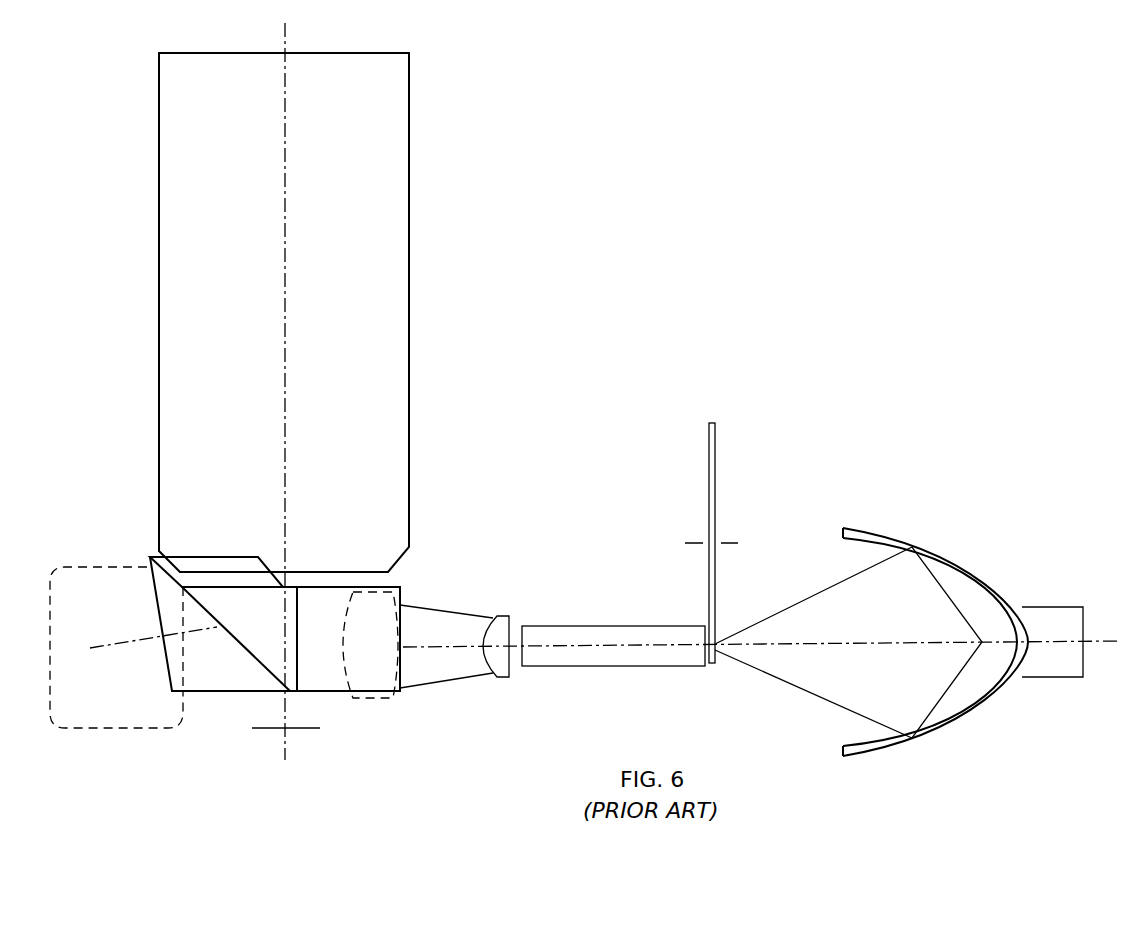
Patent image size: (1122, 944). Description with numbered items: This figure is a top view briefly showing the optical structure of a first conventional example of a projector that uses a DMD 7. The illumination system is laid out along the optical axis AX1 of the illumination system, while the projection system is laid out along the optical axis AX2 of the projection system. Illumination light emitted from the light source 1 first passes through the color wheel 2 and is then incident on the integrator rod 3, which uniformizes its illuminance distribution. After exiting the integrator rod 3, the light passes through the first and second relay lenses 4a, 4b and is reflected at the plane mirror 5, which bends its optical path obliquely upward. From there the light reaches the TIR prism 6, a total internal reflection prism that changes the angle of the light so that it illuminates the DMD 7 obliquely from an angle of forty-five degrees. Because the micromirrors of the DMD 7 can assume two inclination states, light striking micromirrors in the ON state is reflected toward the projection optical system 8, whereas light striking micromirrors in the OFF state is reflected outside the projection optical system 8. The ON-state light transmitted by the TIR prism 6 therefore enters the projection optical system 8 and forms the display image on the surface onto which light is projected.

The light source 1 is at (946, 540).
The color wheel 2 is at (712, 422).
The integrator rod 3 is at (613, 626).
The first relay lens 4a is at (505, 616).
The second relay lens 4b is at (380, 700).
The plane mirror 5 is at (88, 566).
The TIR prism 6 is at (215, 693).
The DMD 7 is at (305, 730).
The projection optical system 8 is at (409, 288).
The optical axis of the illumination system AX1 is at (517, 650).
The optical axis of the projection system AX2 is at (285, 341).